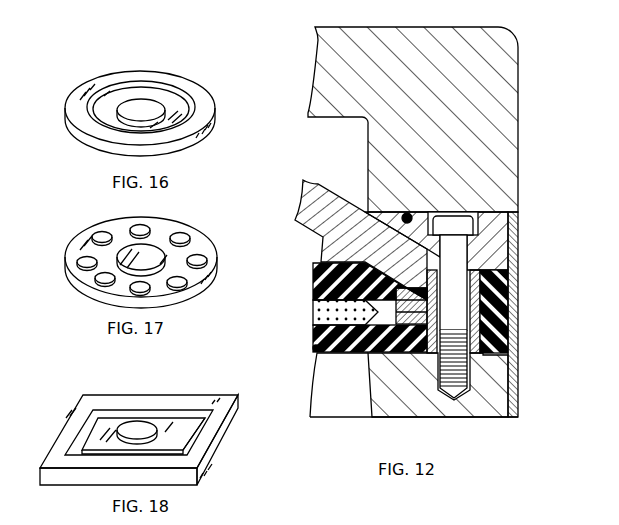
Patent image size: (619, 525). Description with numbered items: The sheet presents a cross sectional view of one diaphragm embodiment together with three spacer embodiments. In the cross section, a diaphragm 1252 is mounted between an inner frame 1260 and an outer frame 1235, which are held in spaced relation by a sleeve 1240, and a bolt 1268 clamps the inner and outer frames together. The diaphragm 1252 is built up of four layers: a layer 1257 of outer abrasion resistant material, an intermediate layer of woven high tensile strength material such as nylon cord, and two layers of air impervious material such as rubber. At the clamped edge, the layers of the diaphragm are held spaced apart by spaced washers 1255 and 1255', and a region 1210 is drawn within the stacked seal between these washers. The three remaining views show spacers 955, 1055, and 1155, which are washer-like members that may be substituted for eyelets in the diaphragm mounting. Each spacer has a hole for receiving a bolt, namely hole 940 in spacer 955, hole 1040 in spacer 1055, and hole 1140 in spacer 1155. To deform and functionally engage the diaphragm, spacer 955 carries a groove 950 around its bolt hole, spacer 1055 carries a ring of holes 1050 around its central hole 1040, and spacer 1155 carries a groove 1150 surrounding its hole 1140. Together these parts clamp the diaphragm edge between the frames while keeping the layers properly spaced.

In FIG. 16, the hole 940 is at (142, 113).
In FIG. 16, the groove 950 is at (190, 102).
In FIG. 16, the spacer 955 is at (214, 130).
In FIG. 17, the hole 1040 is at (143, 243).
In FIG. 17, the holes 1050 is at (155, 277).
In FIG. 17, the spacer 1055 is at (183, 293).
In FIG. 18, the hole 1140 is at (140, 428).
In FIG. 18, the groove 1150 is at (190, 437).
In FIG. 18, the spacer 1155 is at (200, 472).
In FIG. 12, the bolt 1268 is at (462, 247).
In FIG. 12, the inner frame 1260 is at (498, 250).
In FIG. 12, the washer 1255 is at (509, 311).
In FIG. 12, the sleeve 1240 is at (508, 307).
In FIG. 12, the washer 1255' is at (536, 314).
In FIG. 12, the seal energizer 1210 is at (311, 311).
In FIG. 12, the diaphragm 1252 is at (310, 348).
In FIG. 12, the layer of outer abrasion resistant material 1257 is at (318, 357).
In FIG. 12, the outer frame 1235 is at (418, 407).